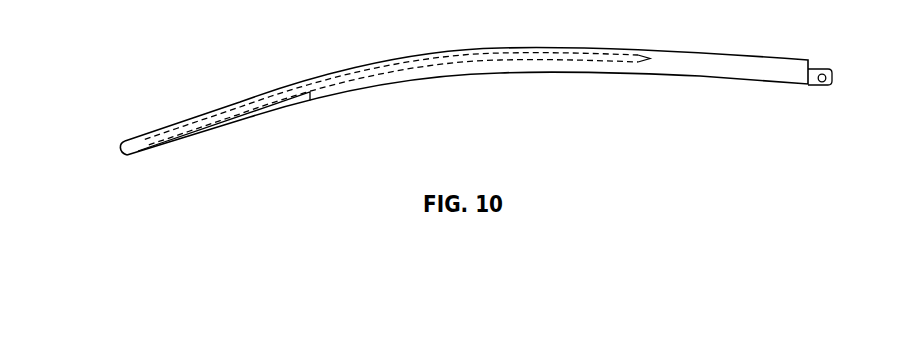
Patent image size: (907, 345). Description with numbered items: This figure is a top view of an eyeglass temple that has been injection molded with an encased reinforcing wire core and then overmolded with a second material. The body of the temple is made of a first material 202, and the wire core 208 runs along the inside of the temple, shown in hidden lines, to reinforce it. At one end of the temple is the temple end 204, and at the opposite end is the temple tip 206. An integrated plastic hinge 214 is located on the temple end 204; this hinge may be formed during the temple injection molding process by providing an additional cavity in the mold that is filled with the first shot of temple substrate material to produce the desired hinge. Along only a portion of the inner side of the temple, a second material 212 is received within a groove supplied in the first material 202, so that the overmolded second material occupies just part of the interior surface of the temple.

The first material 202 is at (727, 63).
The temple end 204 is at (812, 63).
The temple tip 206 is at (121, 153).
The wire core 208 is at (553, 58).
The second material 212 is at (250, 122).
The integrated plastic hinge 214 is at (822, 85).